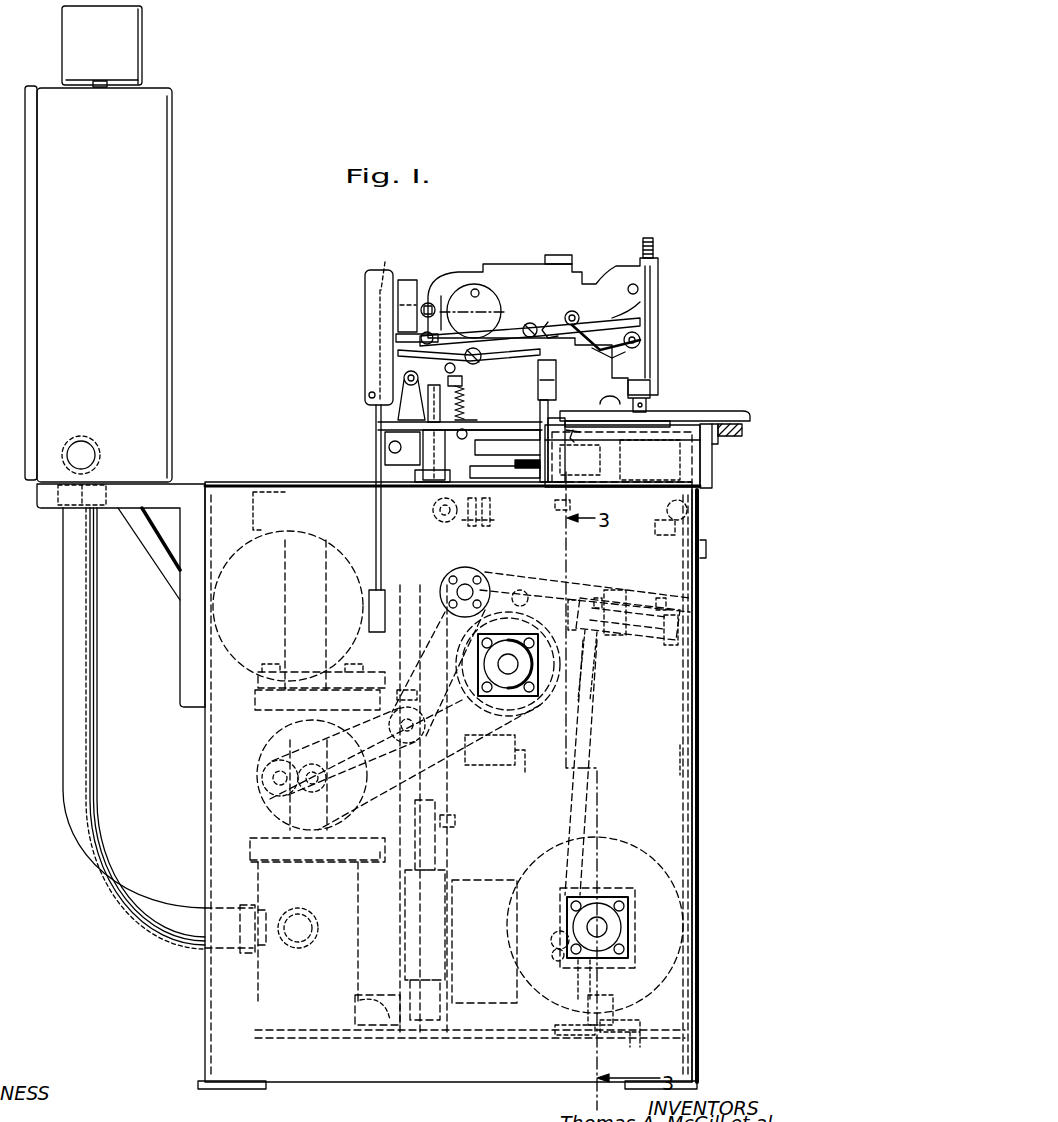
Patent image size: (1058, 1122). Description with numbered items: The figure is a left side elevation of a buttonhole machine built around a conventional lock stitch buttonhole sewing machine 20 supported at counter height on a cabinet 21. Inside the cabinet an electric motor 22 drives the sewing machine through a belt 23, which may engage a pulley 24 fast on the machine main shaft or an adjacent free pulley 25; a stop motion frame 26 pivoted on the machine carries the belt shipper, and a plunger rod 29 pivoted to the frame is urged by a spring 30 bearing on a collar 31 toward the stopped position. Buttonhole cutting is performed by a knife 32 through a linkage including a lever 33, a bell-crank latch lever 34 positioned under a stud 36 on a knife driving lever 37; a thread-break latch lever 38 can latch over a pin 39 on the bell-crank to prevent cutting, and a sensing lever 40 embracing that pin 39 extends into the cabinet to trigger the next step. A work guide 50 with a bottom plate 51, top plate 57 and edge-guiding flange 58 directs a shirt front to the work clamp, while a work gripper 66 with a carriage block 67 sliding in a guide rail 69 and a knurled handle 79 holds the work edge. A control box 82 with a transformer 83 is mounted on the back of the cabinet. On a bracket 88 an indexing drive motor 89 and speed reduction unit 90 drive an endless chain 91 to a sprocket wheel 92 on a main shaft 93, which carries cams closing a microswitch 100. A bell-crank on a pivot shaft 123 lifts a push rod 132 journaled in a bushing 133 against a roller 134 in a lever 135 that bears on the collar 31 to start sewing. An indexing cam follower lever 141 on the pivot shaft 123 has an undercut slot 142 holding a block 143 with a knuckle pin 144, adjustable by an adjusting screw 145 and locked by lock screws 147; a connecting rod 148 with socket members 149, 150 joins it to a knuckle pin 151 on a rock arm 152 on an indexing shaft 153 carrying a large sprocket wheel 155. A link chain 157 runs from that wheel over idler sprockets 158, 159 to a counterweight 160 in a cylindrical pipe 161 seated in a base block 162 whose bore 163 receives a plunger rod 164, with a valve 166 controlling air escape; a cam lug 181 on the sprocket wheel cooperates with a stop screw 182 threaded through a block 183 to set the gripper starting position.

The lock stitch buttonhole sewing machine 20 is at (513, 270).
The cabinet 21 is at (252, 478).
The electric motor 22 is at (310, 540).
The belt 23 is at (372, 466).
The pulley 24 is at (386, 435).
The pulley 25 is at (368, 287).
The stop motion frame 26 is at (398, 342).
The plunger rod 29 is at (456, 369).
The spring 30 is at (474, 414).
The collar 31 is at (460, 404).
The knife 32 is at (626, 410).
The lever 33 is at (420, 372).
The bell-crank latch lever 34 is at (584, 325).
The stud 36 is at (546, 322).
The knife driving lever 37 is at (607, 312).
The latch lever 38 is at (608, 356).
The pin 39 is at (528, 326).
The sensing lever 40 is at (548, 420).
The work guide 50 is at (662, 414).
The bottom plate 51 is at (622, 456).
The top plate 57 is at (738, 410).
The edge-guiding flange 58 is at (700, 411).
The work gripper 66 is at (712, 484).
The carriage block 67 is at (706, 548).
The guide rail 69 is at (698, 738).
The knurled handle 79 is at (732, 438).
The control box 82 is at (158, 204).
The transformer 83 is at (138, 48).
The bracket 88 is at (243, 845).
The indexing drive motor 89 is at (270, 735).
The speed reduction unit 90 is at (257, 800).
The endless chain 91 is at (388, 725).
The sprocket wheel 92 is at (520, 710).
The main shaft 93 is at (506, 666).
The microswitch 100 is at (540, 765).
The pivot shaft 123 is at (462, 585).
The push rod 132 is at (428, 400).
The bushing 133 is at (435, 447).
The roller 134 is at (404, 380).
The lever 135 is at (450, 387).
The indexing cam follower lever 141 is at (545, 590).
The undercut slot 142 is at (625, 640).
The block 143 is at (580, 595).
The knuckle pin 144 is at (613, 598).
The adjusting screw 145 is at (665, 640).
The lock screws 147 is at (600, 590).
The connecting rod 148 is at (590, 740).
The socket member 149 is at (588, 636).
The socket member 150 is at (556, 940).
The knuckle pin 151 is at (553, 953).
The rock arm 152 is at (576, 975).
The indexing shaft 153 is at (605, 926).
The sprocket wheel 155 is at (645, 848).
The link chain 157 is at (563, 503).
The idler sprocket 158 is at (666, 511).
The idler sprocket 159 is at (434, 536).
The counterweight 160 is at (452, 913).
The cylindrical pipe 161 is at (455, 847).
The base block 162 is at (462, 1017).
The bore 163 is at (440, 1032).
The plunger rod 164 is at (447, 975).
The valve 166 is at (410, 1028).
The cam lug 181 is at (615, 1005).
The stop screw 182 is at (632, 1022).
The block 183 is at (557, 1025).